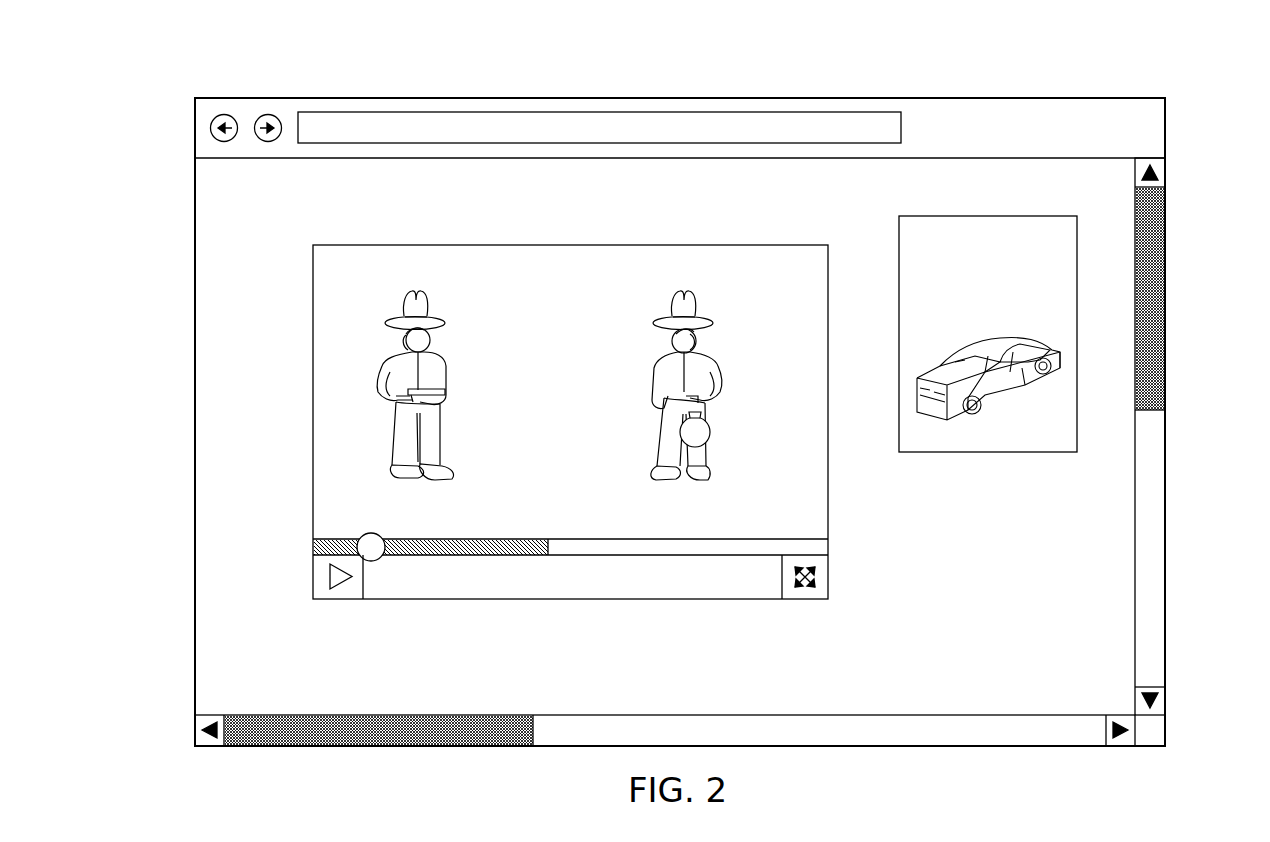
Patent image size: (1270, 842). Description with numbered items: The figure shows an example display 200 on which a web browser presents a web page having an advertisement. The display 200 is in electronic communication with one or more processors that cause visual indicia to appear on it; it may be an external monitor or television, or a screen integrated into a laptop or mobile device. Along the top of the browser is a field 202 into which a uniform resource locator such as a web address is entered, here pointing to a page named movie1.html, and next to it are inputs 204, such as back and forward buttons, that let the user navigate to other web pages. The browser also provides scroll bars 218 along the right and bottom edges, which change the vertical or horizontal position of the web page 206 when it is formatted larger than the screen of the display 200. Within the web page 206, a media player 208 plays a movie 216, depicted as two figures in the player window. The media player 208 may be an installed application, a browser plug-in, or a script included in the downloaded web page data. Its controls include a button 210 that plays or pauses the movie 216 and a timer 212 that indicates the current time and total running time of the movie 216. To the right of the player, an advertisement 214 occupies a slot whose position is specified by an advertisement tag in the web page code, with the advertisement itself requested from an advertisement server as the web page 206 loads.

The display 200 is at (195, 262).
The field 202 is at (412, 122).
The inputs 204 is at (222, 115).
The web page 206 is at (218, 398).
The media player 208 is at (312, 266).
The button 210 is at (352, 591).
The timer 212 is at (476, 591).
The advertisement 214 is at (1062, 229).
The movie 216 is at (557, 306).
The scroll bars 218 is at (338, 748).